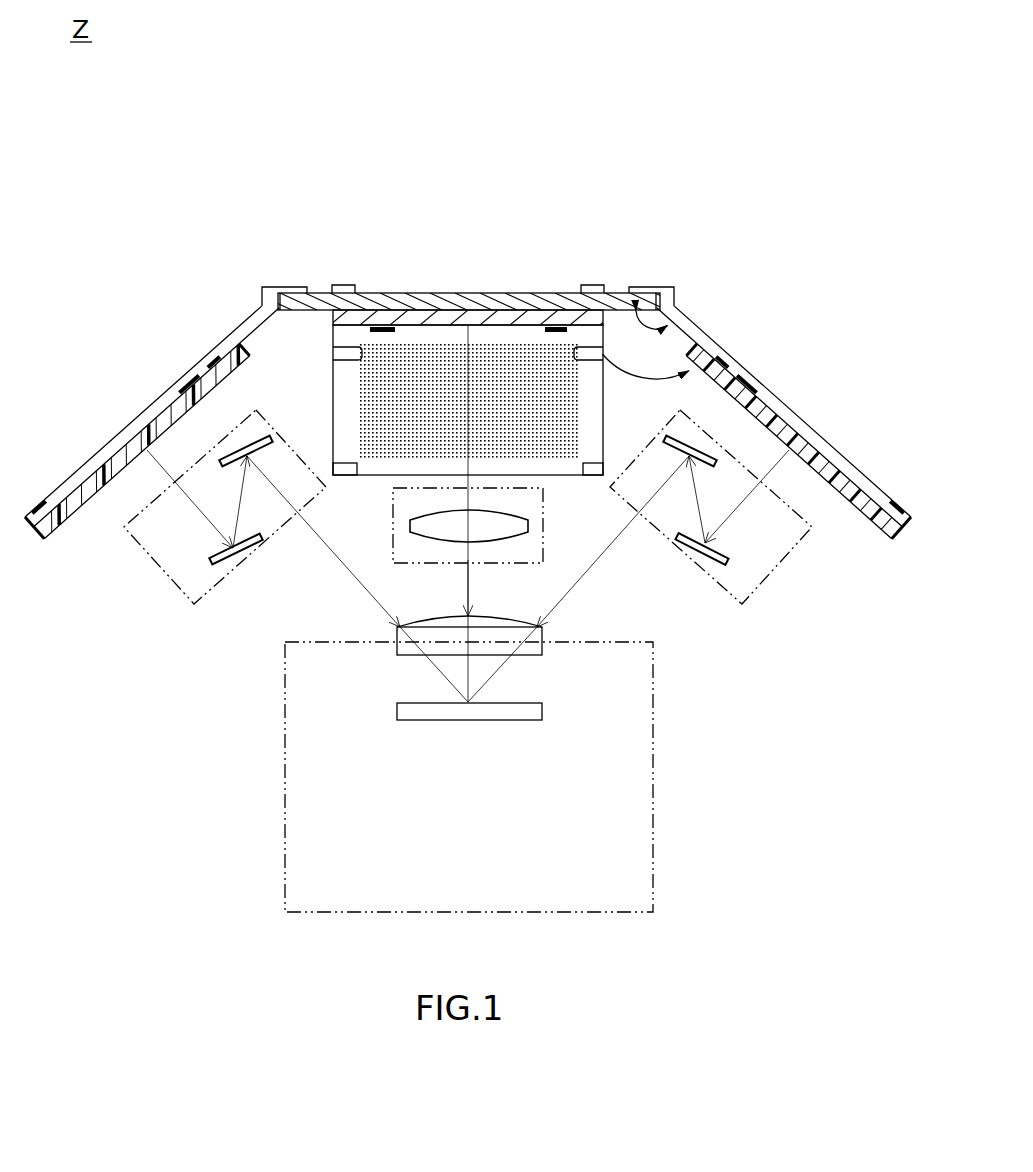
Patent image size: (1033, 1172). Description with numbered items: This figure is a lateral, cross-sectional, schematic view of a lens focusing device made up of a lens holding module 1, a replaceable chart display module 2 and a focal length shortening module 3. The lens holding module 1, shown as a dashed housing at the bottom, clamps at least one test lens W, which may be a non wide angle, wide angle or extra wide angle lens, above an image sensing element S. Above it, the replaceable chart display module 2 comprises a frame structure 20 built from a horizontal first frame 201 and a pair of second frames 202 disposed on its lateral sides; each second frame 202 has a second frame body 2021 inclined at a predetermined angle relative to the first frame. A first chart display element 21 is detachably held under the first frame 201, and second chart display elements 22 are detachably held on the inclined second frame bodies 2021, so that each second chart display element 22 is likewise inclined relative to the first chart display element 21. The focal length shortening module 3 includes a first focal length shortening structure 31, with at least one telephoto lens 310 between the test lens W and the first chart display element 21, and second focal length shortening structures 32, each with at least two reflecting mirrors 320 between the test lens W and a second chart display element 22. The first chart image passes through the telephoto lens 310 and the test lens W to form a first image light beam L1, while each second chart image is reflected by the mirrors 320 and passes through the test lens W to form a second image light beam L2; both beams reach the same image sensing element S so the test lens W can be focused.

The lens holding module 1 is at (658, 790).
The replaceable chart display module 2 is at (110, 430).
The frame structure 20 is at (468, 359).
The first frame 201 is at (375, 297).
The second frame 202 is at (243, 297).
The second frame body 2021 is at (218, 352).
The first chart display element 21 is at (455, 318).
The second chart display element 22 is at (512, 343).
The focal length shortening module 3 is at (467, 573).
The first focal length shortening structure 31 is at (345, 540).
The second focal length shortening structure 32 is at (160, 567).
The reflecting mirror 320 is at (249, 441).
The telephoto lens 310 is at (528, 525).
The test lens W is at (547, 634).
The image sensing element S is at (548, 718).
The first image light beam L1 is at (474, 662).
The second image light beam L2 is at (485, 687).